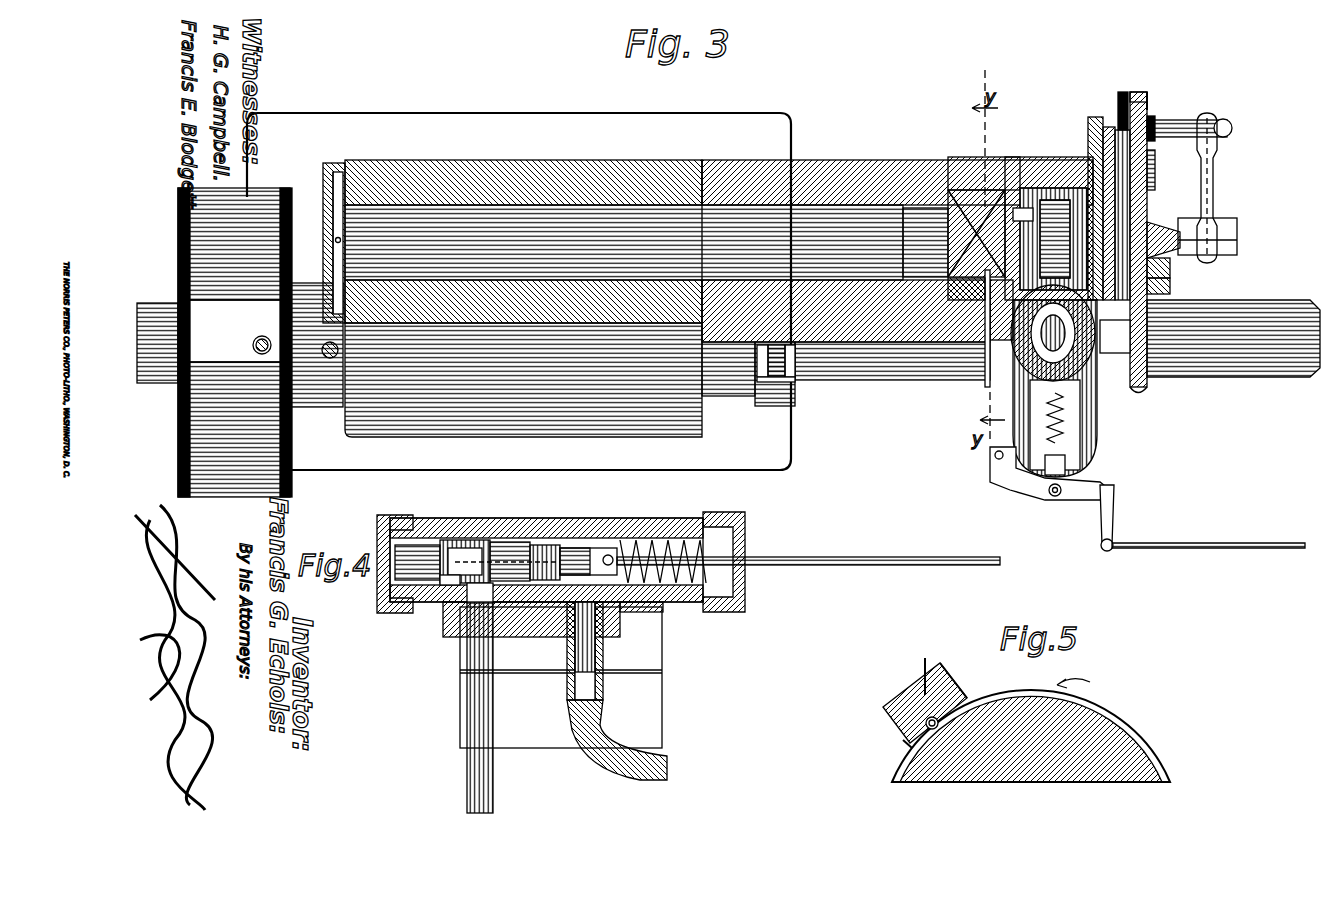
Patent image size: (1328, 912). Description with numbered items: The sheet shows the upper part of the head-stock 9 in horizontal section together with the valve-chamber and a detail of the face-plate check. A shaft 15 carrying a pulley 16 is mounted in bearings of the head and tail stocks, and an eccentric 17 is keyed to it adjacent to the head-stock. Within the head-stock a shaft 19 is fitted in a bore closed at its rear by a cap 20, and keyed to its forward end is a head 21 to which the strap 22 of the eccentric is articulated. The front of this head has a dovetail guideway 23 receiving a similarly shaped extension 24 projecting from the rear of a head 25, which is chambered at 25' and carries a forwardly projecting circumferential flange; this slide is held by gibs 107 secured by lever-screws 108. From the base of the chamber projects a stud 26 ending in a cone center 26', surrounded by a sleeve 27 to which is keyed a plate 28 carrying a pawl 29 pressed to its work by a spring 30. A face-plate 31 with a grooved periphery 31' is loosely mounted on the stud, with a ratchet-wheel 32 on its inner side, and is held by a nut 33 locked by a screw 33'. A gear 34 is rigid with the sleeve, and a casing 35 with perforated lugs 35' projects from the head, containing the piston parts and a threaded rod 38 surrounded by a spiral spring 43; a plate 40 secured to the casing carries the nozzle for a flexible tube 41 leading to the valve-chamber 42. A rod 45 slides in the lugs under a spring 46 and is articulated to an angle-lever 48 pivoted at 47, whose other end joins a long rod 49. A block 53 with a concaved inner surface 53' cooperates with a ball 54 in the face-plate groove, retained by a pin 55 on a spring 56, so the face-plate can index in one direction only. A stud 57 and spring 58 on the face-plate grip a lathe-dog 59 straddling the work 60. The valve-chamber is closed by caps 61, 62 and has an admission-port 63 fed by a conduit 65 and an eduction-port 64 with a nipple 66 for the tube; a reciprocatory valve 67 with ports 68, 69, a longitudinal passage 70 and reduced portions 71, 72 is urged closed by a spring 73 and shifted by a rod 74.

In FIG. 3, the head-stock 9 is at (523, 389).
In FIG. 3, the shaft 15 is at (1232, 350).
In FIG. 3, the pulley 16 is at (240, 342).
In FIG. 3, the eccentric 17 is at (797, 390).
In FIG. 3, the shaft 19 is at (646, 241).
In FIG. 3, the cap 20 is at (333, 163).
In FIG. 3, the head 21 is at (860, 160).
In FIG. 3, the strap 22 is at (800, 384).
In FIG. 3, the guideway 23 is at (955, 190).
In FIG. 3, the extension 24 is at (976, 233).
In FIG. 3, the head 25 is at (1077, 208).
In FIG. 3, the chamber 25' is at (1051, 181).
In FIG. 3, the stud or short shaft 26 is at (1045, 211).
In FIG. 3, the cone center 26' is at (1170, 222).
In FIG. 3, the sleeve 27 is at (1115, 336).
In FIG. 3, the plate 28 is at (1093, 117).
In FIG. 3, the pawl 29 is at (1122, 92).
In FIG. 3, the spring 30 is at (1140, 92).
In FIG. 3, the face-plate 31 is at (1159, 238).
In FIG. 5, the face-plate 31 is at (1031, 736).
In FIG. 3, the grooved periphery 31' is at (1176, 92).
In FIG. 3, the ratchet-wheel 32 is at (1150, 166).
In FIG. 3, the nut 33 is at (1185, 290).
In FIG. 3, the screw 33' is at (1172, 273).
In FIG. 3, the gear 34 is at (1045, 270).
In FIG. 3, the casing 35 is at (1088, 388).
In FIG. 3, the perforated lugs 35' is at (1097, 463).
In FIG. 3, the rod 38 is at (1001, 311).
In FIG. 3, the plate 40 is at (990, 480).
In FIG. 4, the flexible tube 41 is at (655, 765).
In FIG. 4, the valve-chamber 42 is at (640, 520).
In FIG. 3, the spiral spring 43 is at (1053, 333).
In FIG. 3, the rod 45 is at (1048, 492).
In FIG. 3, the spiral spring 46 is at (1050, 425).
In FIG. 3, the pivot 47 is at (1113, 494).
In FIG. 3, the angle-lever 48 is at (1102, 530).
In FIG. 3, the long rod 49 is at (1250, 548).
In FIG. 5, the block 53 is at (925, 703).
In FIG. 5, the concaved inner surface 53' is at (970, 681).
In FIG. 5, the ball 54 is at (929, 665).
In FIG. 5, the pin 55 is at (905, 738).
In FIG. 5, the spring 56 is at (906, 745).
In FIG. 3, the stud 57 is at (1232, 128).
In FIG. 3, the spring 58 is at (1230, 122).
In FIG. 3, the lathe-dog 59 is at (1217, 170).
In FIG. 3, the work or tool-blank 60 is at (1237, 232).
In FIG. 4, the cap 61 is at (388, 515).
In FIG. 4, the cap 62 is at (728, 512).
In FIG. 4, the admission-port 63 is at (470, 600).
In FIG. 4, the eduction-port 64 is at (630, 610).
In FIG. 4, the conduit 65 is at (495, 778).
In FIG. 4, the nipple 66 is at (585, 645).
In FIG. 4, the reciprocatory valve 67 is at (505, 542).
In FIG. 4, the port 68 is at (452, 585).
In FIG. 4, the port 69 is at (590, 545).
In FIG. 4, the longitudinal passage 70 is at (452, 540).
In FIG. 4, the reduced portion 71 is at (465, 540).
In FIG. 4, the reduced portion 72 is at (548, 548).
In FIG. 4, the spring 73 is at (735, 535).
In FIG. 4, the rod 74 is at (845, 557).
In FIG. 3, the gibs 107 is at (958, 300).
In FIG. 3, the lever-screws 108 is at (985, 382).